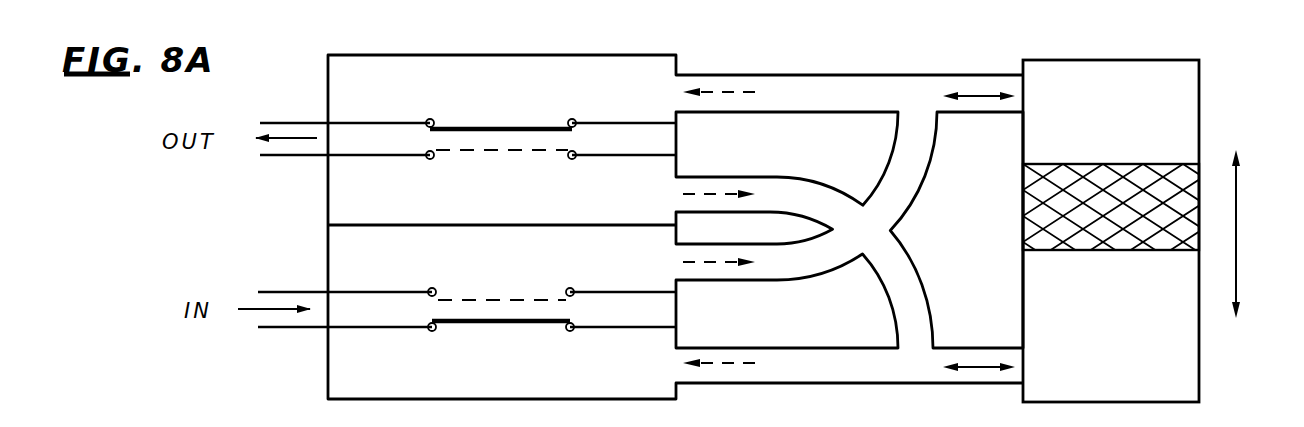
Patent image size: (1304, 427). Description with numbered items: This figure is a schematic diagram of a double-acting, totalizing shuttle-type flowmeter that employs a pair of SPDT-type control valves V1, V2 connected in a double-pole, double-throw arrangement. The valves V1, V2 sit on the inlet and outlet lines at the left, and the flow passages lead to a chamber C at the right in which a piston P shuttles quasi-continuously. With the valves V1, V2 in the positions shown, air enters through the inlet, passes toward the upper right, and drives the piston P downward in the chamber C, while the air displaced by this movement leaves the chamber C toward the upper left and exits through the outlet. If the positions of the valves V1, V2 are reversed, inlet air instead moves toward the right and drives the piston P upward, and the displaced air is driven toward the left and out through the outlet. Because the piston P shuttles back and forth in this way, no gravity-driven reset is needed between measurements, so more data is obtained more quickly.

The control valve V1 is at (481, 119).
The control valve V2 is at (474, 285).
The chamber C is at (1213, 95).
The piston P is at (1187, 187).